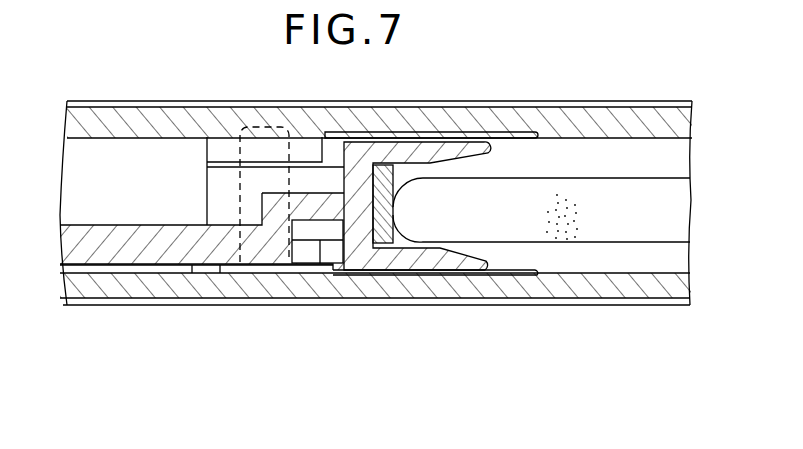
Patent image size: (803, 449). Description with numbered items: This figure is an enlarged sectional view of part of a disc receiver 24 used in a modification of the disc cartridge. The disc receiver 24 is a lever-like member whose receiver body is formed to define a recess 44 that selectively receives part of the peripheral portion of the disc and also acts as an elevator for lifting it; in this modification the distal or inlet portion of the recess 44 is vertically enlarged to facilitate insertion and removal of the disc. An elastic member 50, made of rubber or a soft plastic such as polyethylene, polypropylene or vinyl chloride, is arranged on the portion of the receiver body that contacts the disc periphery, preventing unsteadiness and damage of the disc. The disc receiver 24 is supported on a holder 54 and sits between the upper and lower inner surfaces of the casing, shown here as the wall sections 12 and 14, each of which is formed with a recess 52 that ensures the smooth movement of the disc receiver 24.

The upper housing wall 12 is at (214, 116).
The lower housing wall 14 is at (171, 295).
The disc receiver 24 is at (365, 148).
The recess 44 is at (453, 197).
The elastic member 50 is at (383, 174).
The recess 52 is at (522, 140).
The holder 54 is at (220, 267).